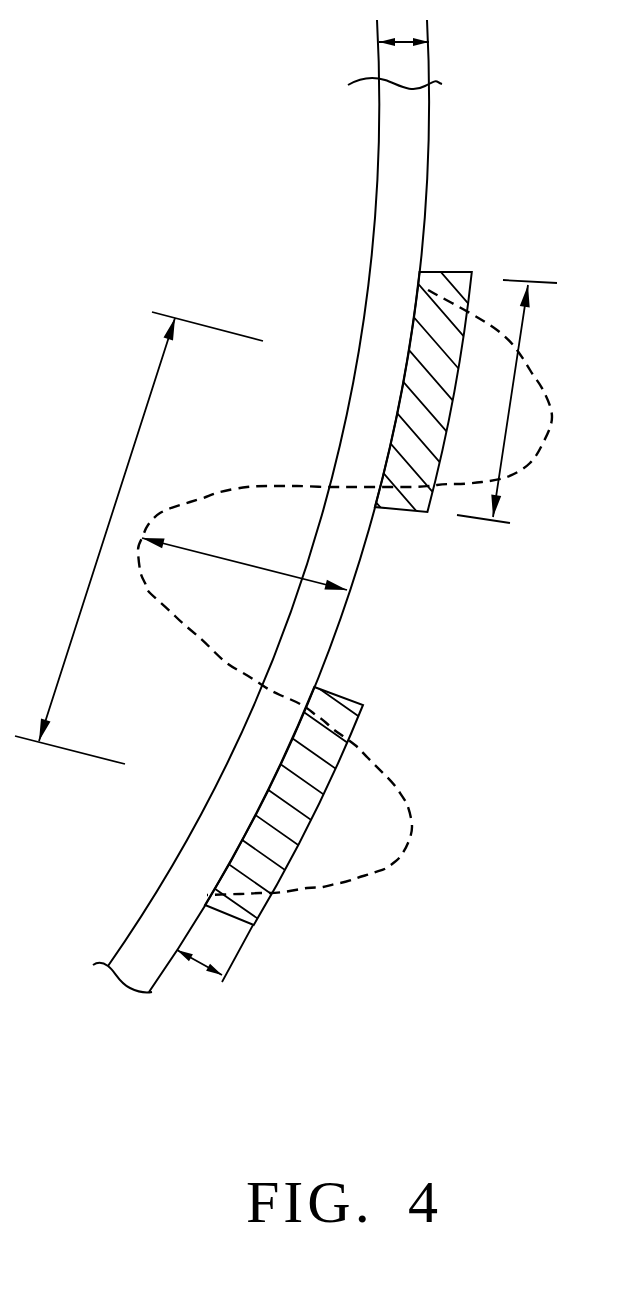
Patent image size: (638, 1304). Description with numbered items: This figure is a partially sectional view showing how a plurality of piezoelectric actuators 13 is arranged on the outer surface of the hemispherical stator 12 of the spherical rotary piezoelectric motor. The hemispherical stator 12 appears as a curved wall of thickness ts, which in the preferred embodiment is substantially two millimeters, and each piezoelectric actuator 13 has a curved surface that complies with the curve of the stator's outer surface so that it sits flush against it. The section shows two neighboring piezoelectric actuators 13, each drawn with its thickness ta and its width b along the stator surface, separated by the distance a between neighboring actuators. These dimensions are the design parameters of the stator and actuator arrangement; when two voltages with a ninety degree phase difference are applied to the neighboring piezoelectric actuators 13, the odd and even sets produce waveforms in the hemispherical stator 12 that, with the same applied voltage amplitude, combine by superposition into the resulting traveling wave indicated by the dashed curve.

The hemispherical stator 12 is at (403, 144).
The piezoelectric actuator 13 is at (437, 278).
The distance between neighboring piezoelectric actuators a is at (139, 538).
The width of the piezoelectric actuator b is at (507, 401).
The thickness of the hemispherical stator ts is at (404, 23).
The thickness of the piezoelectric actuator ta is at (215, 962).